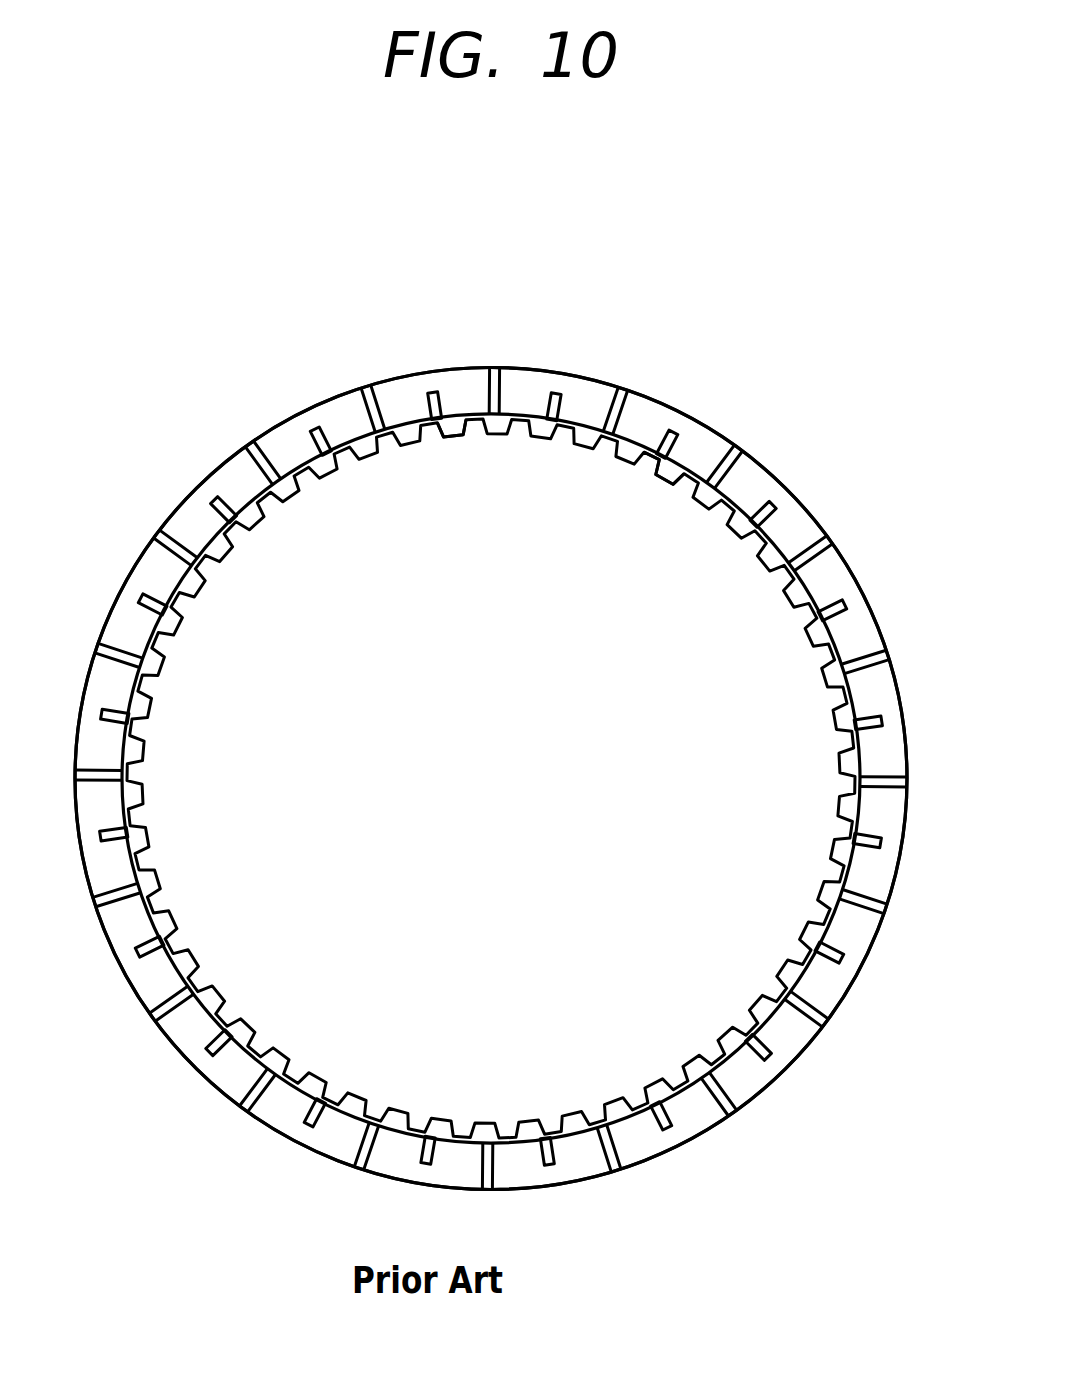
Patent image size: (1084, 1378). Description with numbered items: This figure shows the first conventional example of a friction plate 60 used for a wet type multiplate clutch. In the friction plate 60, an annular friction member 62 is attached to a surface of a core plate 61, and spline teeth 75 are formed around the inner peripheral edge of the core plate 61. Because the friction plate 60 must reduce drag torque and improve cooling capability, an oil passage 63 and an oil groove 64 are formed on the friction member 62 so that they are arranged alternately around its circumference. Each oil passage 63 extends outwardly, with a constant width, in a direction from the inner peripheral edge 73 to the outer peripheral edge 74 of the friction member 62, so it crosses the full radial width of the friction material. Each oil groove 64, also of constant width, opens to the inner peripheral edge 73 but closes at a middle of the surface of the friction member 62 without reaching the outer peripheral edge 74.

The friction plate 60 is at (690, 246).
The core plate 61 is at (363, 443).
The friction member 62 is at (340, 410).
The oil passage 63 is at (497, 388).
The oil groove 64 is at (556, 392).
The inner peripheral edge 73 is at (663, 477).
The outer peripheral edge 74 is at (712, 425).
The spline teeth 75 is at (453, 433).